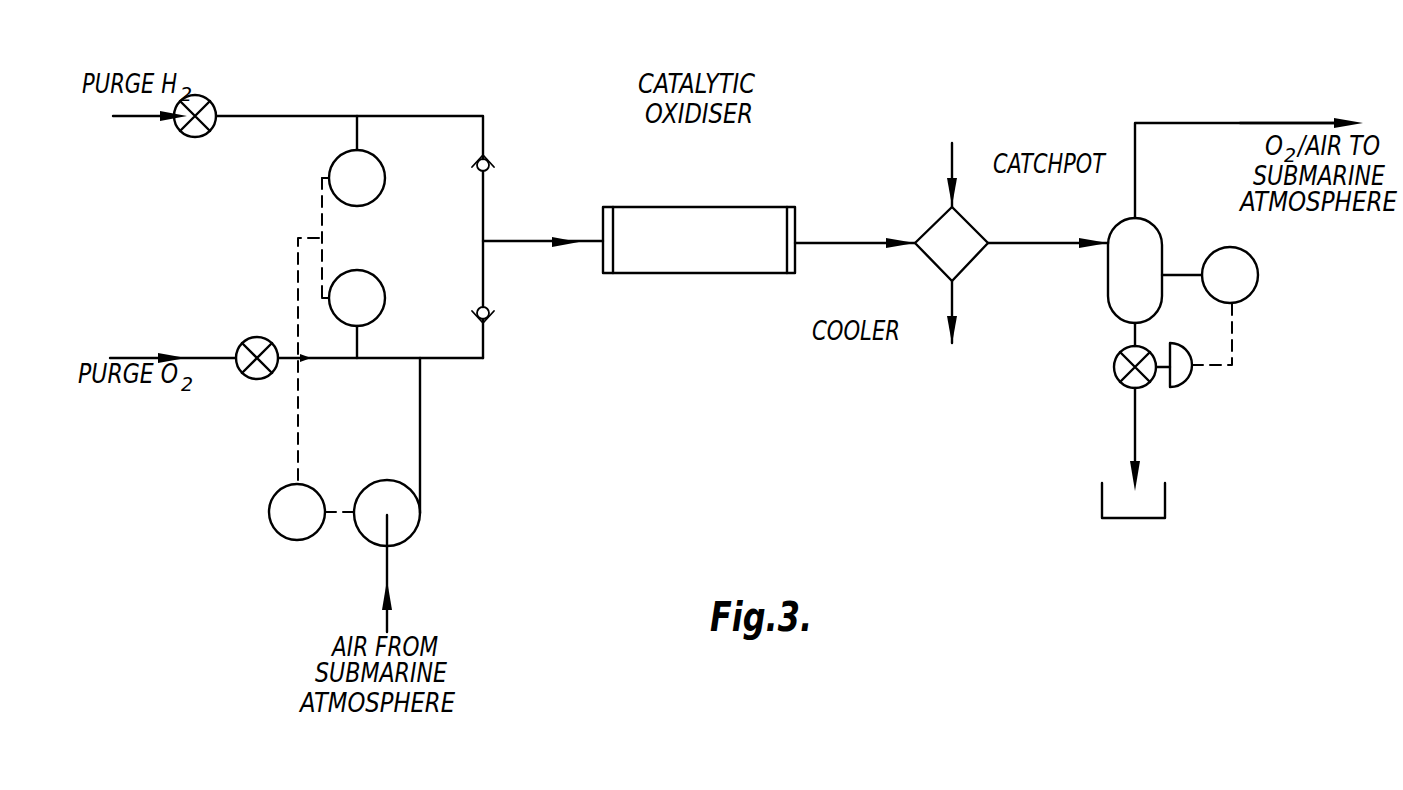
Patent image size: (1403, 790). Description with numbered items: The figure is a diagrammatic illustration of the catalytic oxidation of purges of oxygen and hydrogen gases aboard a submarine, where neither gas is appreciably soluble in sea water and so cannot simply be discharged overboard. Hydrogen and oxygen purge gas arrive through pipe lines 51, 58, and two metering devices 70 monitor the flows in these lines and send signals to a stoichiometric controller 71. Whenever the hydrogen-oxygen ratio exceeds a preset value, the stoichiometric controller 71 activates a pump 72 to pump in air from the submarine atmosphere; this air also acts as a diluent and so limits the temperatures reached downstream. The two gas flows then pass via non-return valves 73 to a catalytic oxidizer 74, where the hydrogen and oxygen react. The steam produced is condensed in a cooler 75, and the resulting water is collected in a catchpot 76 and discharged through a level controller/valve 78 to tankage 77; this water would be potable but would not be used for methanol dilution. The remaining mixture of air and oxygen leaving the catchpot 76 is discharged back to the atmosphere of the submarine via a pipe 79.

The pipe line 51 is at (218, 116).
The pipe line 58 is at (210, 358).
The metering devices 70 is at (380, 165).
The stoichiometric controller 71 is at (268, 508).
The pump 72 is at (420, 517).
The non-return valves 73 is at (490, 168).
The catalytic oxidizer 74 is at (694, 222).
The cooler 75 is at (938, 250).
The catchpot 76 is at (1120, 237).
The tankage 77 is at (1165, 500).
The level controller/valve 78 is at (1260, 272).
The pipe 79 is at (1287, 122).